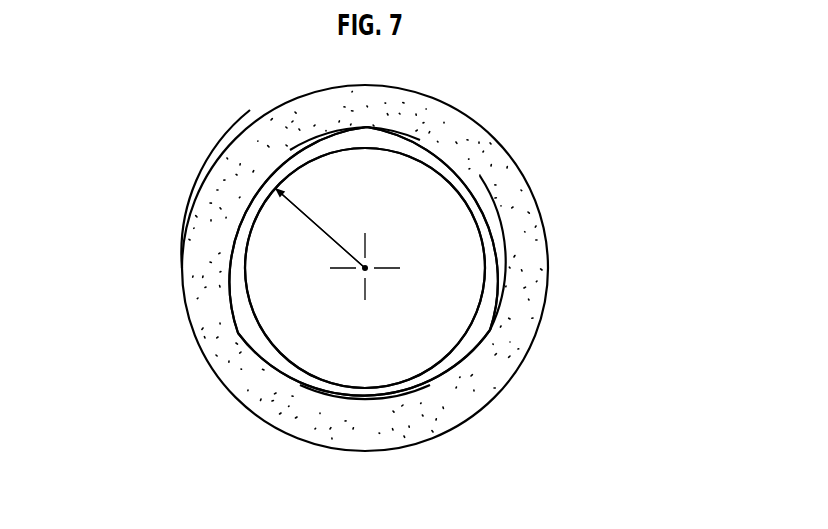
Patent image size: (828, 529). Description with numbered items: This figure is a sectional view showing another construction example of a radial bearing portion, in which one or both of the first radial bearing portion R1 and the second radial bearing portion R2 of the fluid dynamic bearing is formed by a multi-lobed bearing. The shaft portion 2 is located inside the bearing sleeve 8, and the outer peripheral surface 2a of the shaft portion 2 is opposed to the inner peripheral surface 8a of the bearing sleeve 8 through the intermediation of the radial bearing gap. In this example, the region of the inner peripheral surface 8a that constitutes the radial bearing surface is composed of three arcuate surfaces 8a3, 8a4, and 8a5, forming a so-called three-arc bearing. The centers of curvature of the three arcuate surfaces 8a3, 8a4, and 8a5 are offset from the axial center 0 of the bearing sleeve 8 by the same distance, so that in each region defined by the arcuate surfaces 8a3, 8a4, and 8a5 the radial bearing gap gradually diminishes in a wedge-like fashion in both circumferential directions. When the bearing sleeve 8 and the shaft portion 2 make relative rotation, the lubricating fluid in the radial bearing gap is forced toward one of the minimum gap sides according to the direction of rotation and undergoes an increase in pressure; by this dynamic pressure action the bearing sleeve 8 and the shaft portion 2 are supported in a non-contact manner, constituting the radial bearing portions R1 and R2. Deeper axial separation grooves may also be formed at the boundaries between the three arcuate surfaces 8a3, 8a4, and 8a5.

The bearing sleeve 8 is at (462, 115).
The inner peripheral surface 8a is at (262, 215).
The arcuate surface 8a3 is at (492, 253).
The arcuate surface 8a4 is at (318, 140).
The arcuate surface 8a5 is at (375, 386).
The shaft portion 2 is at (450, 220).
The outer peripheral surface 2a is at (480, 308).
The axial center 0 is at (362, 270).
The first radial bearing portion R1 is at (205, 160).
The second radial bearing portion R2 is at (205, 160).